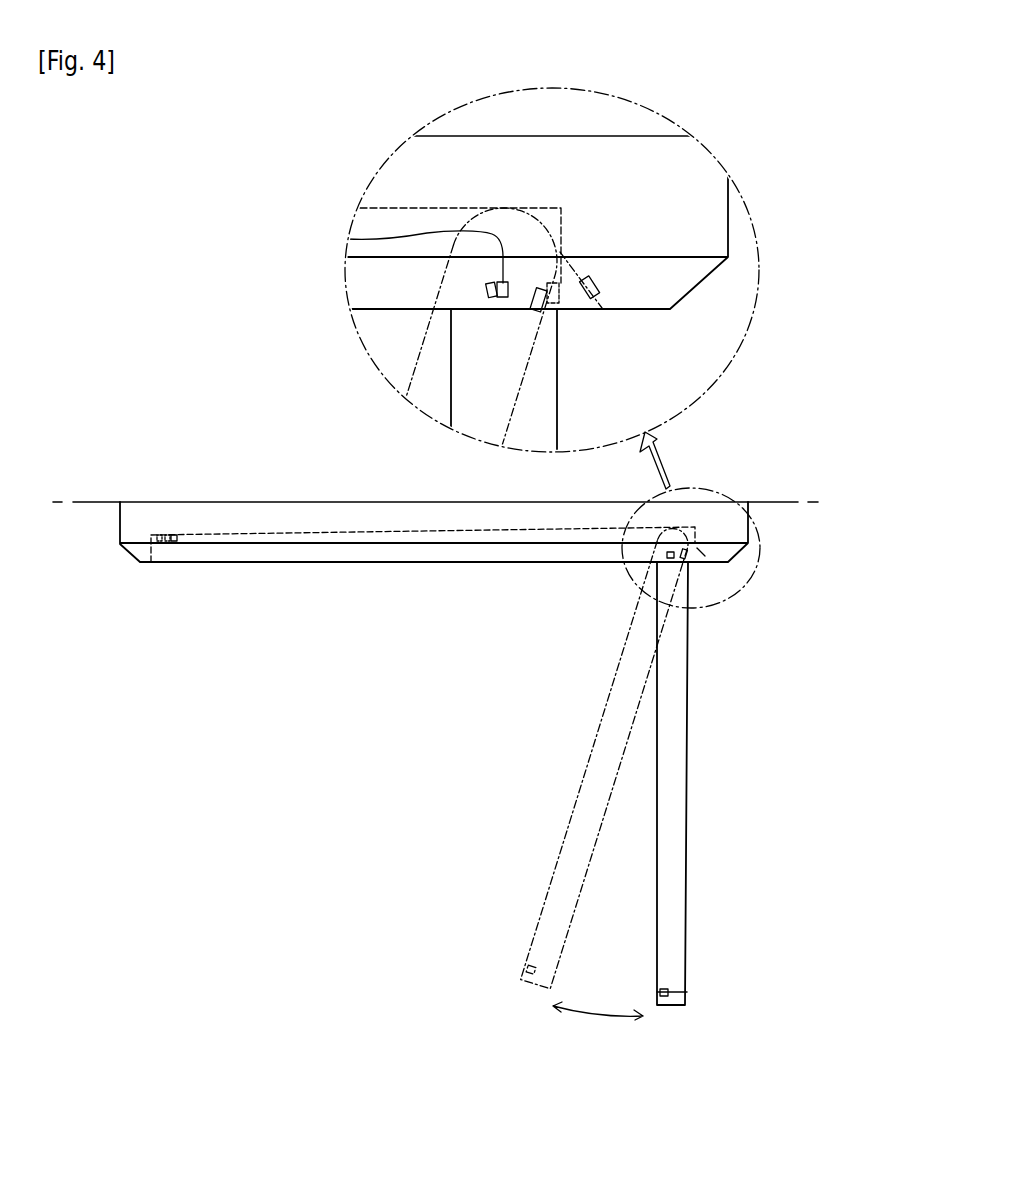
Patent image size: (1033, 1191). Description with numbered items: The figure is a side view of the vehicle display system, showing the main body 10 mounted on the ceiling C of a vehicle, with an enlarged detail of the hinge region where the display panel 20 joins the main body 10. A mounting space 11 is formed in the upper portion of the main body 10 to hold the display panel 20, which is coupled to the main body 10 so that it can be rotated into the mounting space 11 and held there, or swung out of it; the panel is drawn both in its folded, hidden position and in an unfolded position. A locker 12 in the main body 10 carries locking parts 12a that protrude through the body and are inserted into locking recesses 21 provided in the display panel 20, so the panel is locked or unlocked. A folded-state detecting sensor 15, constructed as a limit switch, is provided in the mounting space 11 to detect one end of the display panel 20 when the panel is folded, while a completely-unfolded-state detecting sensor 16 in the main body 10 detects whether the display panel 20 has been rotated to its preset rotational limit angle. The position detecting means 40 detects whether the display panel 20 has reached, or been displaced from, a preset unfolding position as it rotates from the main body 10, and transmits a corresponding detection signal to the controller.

The main body 10 is at (266, 495).
The mounting space 11 is at (355, 551).
The locker 12 is at (162, 544).
The locking parts 12a is at (174, 538).
The folded-state detecting sensor 15 is at (180, 539).
The completely-unfolded-state detecting sensor 16 is at (547, 310).
The display panel 20 is at (696, 767).
The locking recesses 21 is at (689, 991).
The position detecting means 40 is at (398, 240).
The ceiling C is at (772, 503).